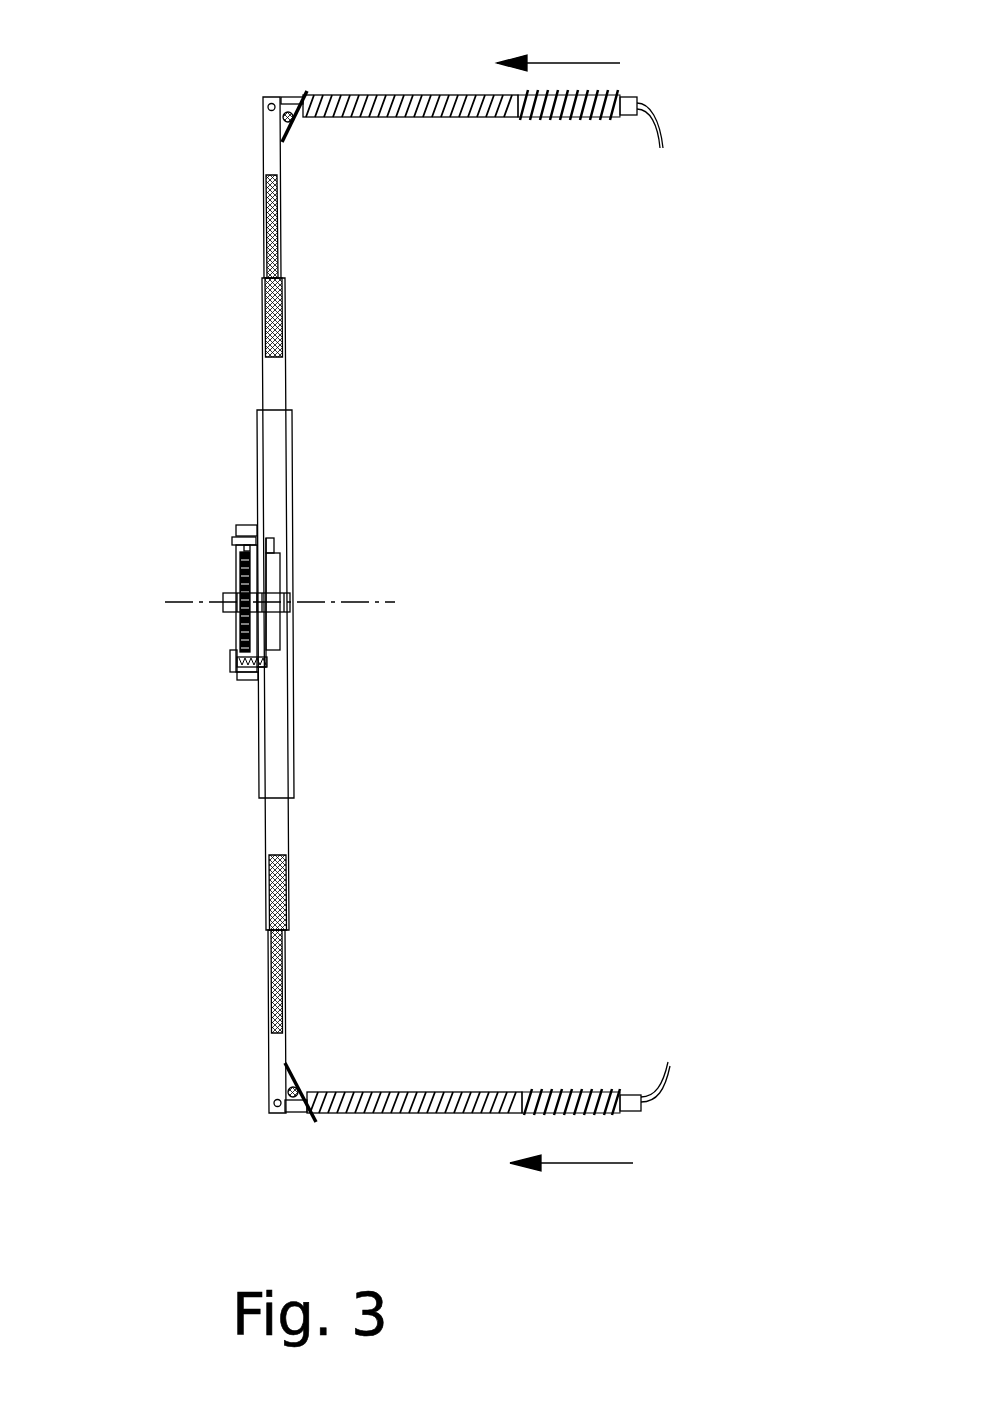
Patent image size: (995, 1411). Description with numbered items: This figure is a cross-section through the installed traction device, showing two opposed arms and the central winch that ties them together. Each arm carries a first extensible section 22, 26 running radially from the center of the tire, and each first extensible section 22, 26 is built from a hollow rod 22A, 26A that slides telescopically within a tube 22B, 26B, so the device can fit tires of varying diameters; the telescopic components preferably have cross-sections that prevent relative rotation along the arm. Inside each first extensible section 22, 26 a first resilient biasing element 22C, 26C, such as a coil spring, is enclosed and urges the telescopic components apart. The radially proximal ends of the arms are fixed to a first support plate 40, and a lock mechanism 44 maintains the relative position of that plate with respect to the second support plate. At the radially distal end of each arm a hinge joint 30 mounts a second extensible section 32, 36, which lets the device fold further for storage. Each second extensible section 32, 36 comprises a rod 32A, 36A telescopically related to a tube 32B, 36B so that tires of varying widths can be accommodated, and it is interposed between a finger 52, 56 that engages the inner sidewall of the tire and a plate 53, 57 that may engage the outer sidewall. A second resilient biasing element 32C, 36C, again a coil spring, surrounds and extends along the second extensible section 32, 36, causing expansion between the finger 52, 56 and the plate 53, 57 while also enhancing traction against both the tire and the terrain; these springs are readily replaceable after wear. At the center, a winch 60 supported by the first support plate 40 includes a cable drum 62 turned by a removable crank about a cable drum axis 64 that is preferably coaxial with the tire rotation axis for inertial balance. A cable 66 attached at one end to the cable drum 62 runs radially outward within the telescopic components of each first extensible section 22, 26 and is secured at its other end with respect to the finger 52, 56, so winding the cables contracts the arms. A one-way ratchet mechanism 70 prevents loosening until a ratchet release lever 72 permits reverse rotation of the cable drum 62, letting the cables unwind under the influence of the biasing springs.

The first extensible section 22 is at (252, 513).
The hollow rod 22A is at (263, 238).
The tube 22B is at (263, 343).
The first resilient biasing element 22C is at (284, 287).
The first extensible section 26 is at (269, 984).
The hollow rod 26A is at (268, 995).
The tube 26B is at (266, 890).
The first resilient biasing element 26C is at (287, 952).
The hinge joint 30 is at (263, 128).
The second extensible section 32 is at (520, 129).
The rod 32A is at (574, 120).
The tube 32B is at (492, 120).
The second resilient biasing element 32C is at (367, 96).
The second extensible section 36 is at (529, 1073).
The rod 36A is at (558, 1090).
The tube 36B is at (470, 1090).
The second resilient biasing element 36C is at (394, 1115).
The first support plate 40 is at (292, 486).
The lock mechanism 44 is at (230, 658).
The finger 52 is at (662, 128).
The plate 53 is at (294, 125).
The finger 56 is at (664, 1084).
The plate 57 is at (292, 1078).
The winch 60 is at (246, 613).
The cable drum 62 is at (273, 582).
The cable drum axis 64 is at (332, 605).
The cable 66 is at (293, 100).
The one-way ratchet mechanism 70 is at (238, 565).
The ratchet release lever 72 is at (232, 540).